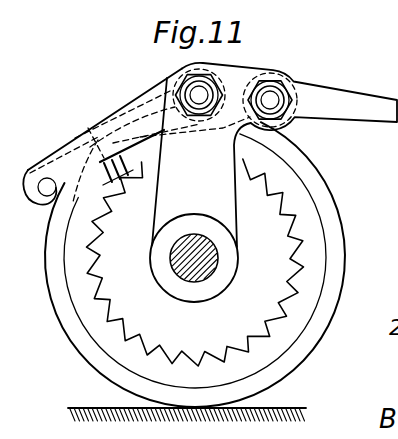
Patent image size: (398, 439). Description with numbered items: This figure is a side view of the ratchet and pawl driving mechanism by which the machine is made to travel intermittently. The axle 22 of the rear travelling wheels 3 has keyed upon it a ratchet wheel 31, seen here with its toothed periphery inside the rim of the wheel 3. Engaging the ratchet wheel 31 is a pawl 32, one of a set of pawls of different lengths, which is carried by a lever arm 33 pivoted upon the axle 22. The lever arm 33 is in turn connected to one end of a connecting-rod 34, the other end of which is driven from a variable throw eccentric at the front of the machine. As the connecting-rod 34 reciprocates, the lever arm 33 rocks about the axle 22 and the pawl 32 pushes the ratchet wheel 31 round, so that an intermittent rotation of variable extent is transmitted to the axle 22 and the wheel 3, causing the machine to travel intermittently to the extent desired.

The rear travelling wheel 3 is at (331, 293).
The axle 22 is at (200, 278).
The ratchet wheel 31 is at (296, 244).
The pawl 32 is at (62, 148).
The lever arm 33 is at (223, 214).
The connecting-rod 34 is at (338, 99).